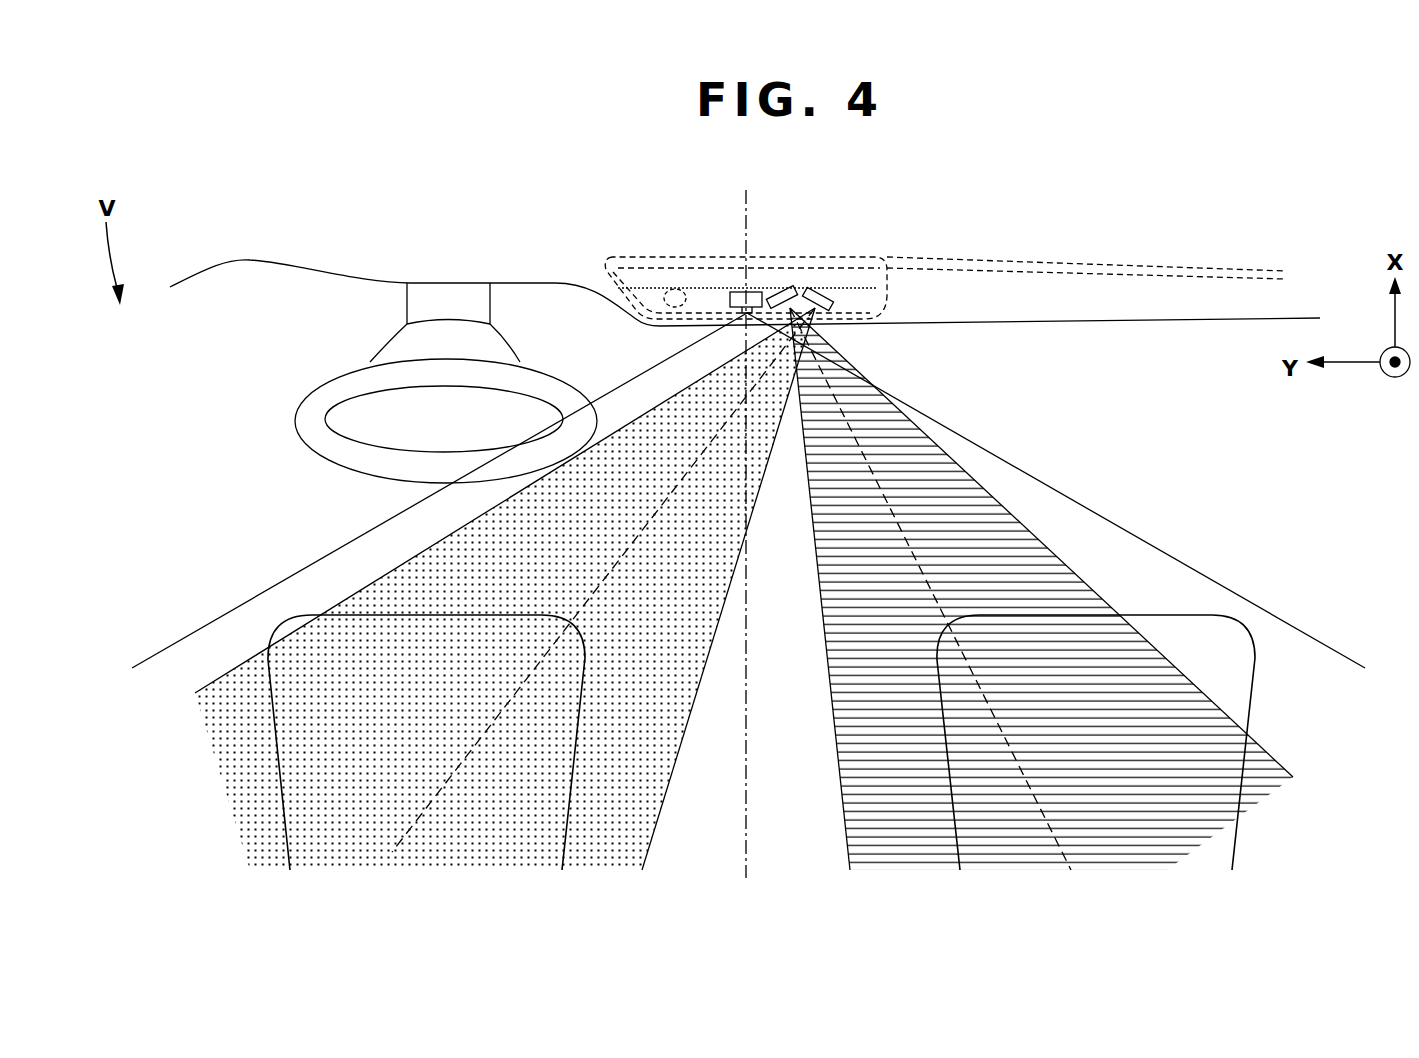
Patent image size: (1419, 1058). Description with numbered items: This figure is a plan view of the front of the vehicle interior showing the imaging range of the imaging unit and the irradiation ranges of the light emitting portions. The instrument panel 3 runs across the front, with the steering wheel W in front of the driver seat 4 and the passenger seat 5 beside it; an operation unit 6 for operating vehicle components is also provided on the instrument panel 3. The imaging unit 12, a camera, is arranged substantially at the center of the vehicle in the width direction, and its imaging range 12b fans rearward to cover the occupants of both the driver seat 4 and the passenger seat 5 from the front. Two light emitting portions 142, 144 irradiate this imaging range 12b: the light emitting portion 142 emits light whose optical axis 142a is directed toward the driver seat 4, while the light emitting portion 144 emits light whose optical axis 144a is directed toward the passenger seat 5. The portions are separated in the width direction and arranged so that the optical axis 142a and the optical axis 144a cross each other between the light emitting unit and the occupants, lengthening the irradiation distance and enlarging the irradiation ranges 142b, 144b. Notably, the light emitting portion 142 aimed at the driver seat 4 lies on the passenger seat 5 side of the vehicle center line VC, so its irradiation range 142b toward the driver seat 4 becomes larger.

The instrument panel 3 is at (1053, 327).
The driver seat 4 is at (268, 645).
The passenger seat 5 is at (1257, 665).
The operation unit 6 is at (672, 289).
The imaging unit 12 is at (738, 292).
The imaging range 12b is at (255, 597).
The light emitting portion 142 is at (825, 288).
The optical axis 142a is at (392, 850).
The irradiation range 142b is at (350, 596).
The light emitting portion 144 is at (778, 286).
The optical axis 144a is at (915, 553).
The irradiation range 144b is at (1045, 543).
The steering wheel W is at (305, 395).
The vehicle center line VC is at (750, 790).